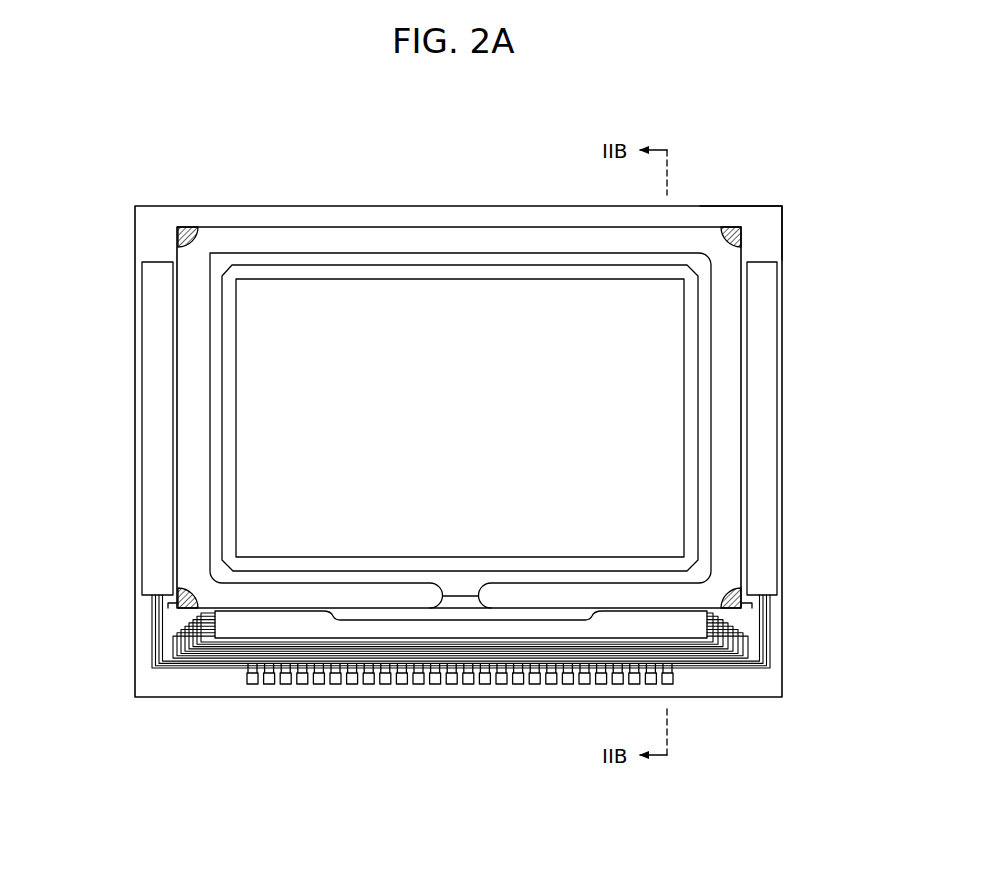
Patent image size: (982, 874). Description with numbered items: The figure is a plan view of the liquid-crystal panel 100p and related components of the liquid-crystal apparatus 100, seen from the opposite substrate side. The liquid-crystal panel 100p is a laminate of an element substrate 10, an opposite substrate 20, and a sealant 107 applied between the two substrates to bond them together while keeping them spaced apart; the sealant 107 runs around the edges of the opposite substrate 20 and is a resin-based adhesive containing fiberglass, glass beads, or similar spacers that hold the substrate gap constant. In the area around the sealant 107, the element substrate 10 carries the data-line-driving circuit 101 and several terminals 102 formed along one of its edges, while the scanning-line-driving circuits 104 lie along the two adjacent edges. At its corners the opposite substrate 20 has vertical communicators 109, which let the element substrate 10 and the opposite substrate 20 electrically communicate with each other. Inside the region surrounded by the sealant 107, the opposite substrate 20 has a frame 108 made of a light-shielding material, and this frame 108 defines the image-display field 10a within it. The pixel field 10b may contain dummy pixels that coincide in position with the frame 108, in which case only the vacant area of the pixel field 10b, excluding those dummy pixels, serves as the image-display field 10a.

The liquid-crystal apparatus 100 is at (753, 128).
The liquid-crystal panel 100p is at (712, 203).
The element substrate 10 is at (463, 207).
The opposite substrate 20 is at (557, 240).
The image-display field 10a is at (356, 418).
The pixel field 10b is at (275, 367).
The scanning-line-driving circuit 104 is at (152, 422).
The sealant 107 is at (723, 377).
The frame 108 is at (693, 340).
The vertical communicator 109 is at (180, 228).
The data-line-driving circuit 101 is at (257, 630).
The terminal 102 is at (350, 684).